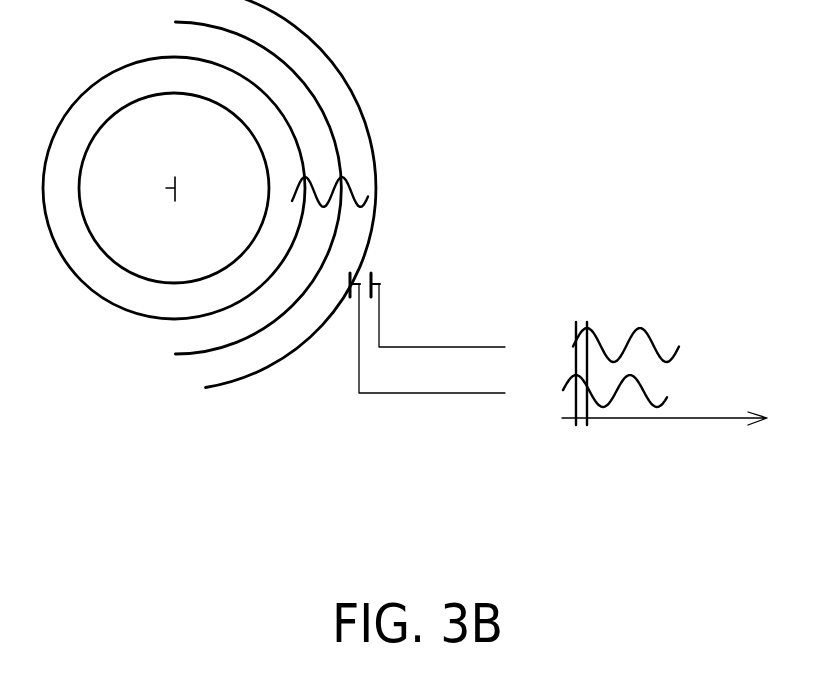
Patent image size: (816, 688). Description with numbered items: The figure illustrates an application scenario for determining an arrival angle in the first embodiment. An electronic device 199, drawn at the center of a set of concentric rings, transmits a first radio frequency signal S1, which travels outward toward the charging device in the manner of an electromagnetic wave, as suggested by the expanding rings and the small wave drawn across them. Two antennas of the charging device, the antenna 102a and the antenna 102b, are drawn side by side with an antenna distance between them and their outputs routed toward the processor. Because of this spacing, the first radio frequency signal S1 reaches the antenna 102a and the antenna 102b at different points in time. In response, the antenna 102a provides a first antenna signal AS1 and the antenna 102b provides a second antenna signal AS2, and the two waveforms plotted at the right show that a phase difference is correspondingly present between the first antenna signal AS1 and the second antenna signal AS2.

The electronic device 199 is at (173, 183).
The first radio frequency signal S1 is at (350, 187).
The antenna 102a is at (348, 292).
The antenna 102b is at (372, 277).
The first antenna signal AS1 is at (651, 335).
The second antenna signal AS2 is at (648, 400).